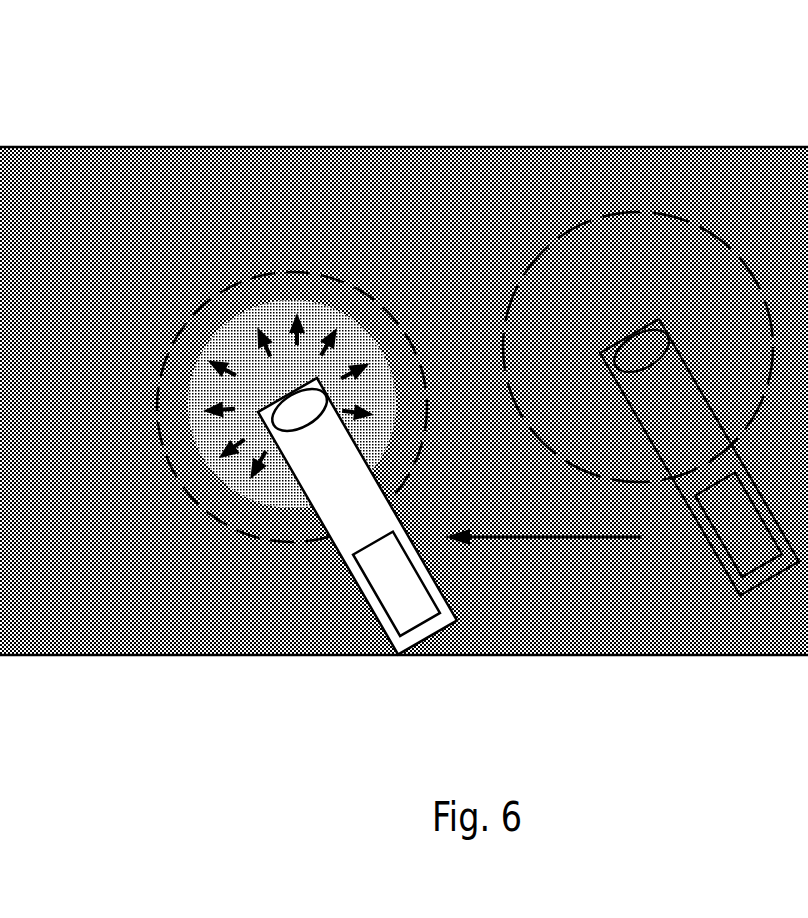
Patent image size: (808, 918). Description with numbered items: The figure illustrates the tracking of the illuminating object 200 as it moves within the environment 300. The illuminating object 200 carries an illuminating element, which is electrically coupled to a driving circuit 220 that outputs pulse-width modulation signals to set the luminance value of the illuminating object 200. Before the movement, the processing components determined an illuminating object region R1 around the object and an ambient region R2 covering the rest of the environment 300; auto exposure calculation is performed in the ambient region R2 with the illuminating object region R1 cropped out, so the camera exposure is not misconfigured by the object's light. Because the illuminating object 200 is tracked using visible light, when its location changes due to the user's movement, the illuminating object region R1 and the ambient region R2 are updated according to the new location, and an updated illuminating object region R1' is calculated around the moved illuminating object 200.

The environment 300 is at (715, 148).
The illuminating object region R1 is at (594, 244).
The updated illuminating object region R1' is at (292, 286).
The ambient region R2 is at (137, 287).
The illuminating object 200 is at (528, 486).
The driving circuit 220 is at (396, 584).